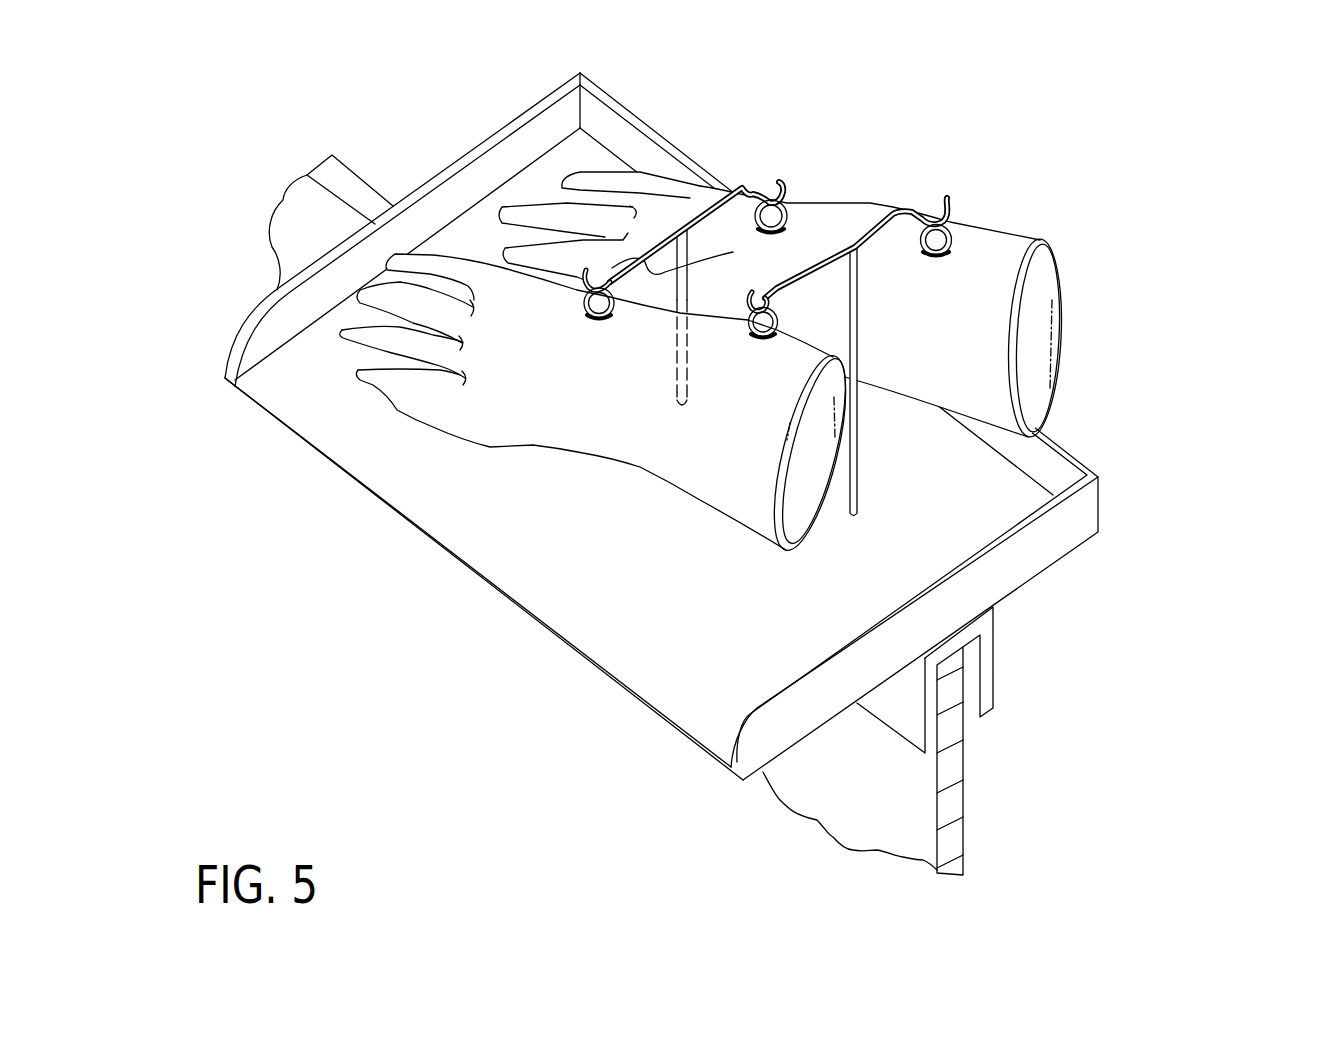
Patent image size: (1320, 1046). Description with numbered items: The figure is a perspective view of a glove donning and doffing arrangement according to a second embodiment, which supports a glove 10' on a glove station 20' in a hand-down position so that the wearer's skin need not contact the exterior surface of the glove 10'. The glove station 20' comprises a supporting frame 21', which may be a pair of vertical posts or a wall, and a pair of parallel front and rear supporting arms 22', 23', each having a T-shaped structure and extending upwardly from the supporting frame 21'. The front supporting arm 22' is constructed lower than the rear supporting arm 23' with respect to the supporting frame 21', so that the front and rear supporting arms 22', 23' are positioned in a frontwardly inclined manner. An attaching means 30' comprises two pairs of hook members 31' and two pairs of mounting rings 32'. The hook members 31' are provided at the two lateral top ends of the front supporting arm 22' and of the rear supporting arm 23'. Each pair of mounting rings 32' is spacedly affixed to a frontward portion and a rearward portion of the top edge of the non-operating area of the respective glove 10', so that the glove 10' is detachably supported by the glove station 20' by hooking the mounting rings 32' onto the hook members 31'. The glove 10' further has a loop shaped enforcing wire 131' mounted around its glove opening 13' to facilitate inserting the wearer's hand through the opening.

The glove 10' is at (701, 383).
The glove opening 13' is at (957, 406).
The loop shaped enforcing wire 131' is at (962, 447).
The glove station 20' is at (909, 281).
The supporting frame 21' is at (756, 474).
The front supporting arm 22' is at (696, 164).
The rear supporting arm 23' is at (938, 179).
The attaching means 30' is at (850, 254).
The hook member 31' is at (804, 220).
The mounting ring 32' is at (831, 252).